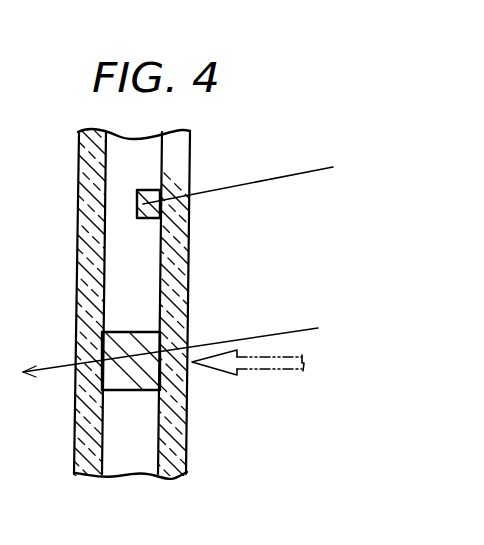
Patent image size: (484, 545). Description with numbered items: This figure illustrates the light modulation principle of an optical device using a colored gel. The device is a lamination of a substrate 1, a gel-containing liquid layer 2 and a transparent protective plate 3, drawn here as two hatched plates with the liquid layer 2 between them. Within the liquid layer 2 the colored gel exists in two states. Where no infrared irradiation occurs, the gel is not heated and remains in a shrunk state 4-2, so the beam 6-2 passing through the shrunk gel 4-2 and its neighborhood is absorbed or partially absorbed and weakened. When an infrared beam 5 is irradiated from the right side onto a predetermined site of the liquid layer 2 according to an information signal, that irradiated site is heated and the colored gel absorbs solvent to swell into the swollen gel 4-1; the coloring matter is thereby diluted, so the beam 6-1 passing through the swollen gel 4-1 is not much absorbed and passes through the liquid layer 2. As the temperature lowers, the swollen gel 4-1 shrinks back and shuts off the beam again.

The substrate 1 is at (172, 467).
The gel-containing liquid layer 2 is at (135, 452).
The transparent protective plate 3 is at (87, 467).
The swollen colored gel 4-1 is at (110, 378).
The shrunk colored gel 4-2 is at (150, 190).
The infrared beam 5 is at (287, 372).
The beam passing through swollen gel 6-1 is at (295, 173).
The beam passing through shrunk gel 6-2 is at (277, 332).